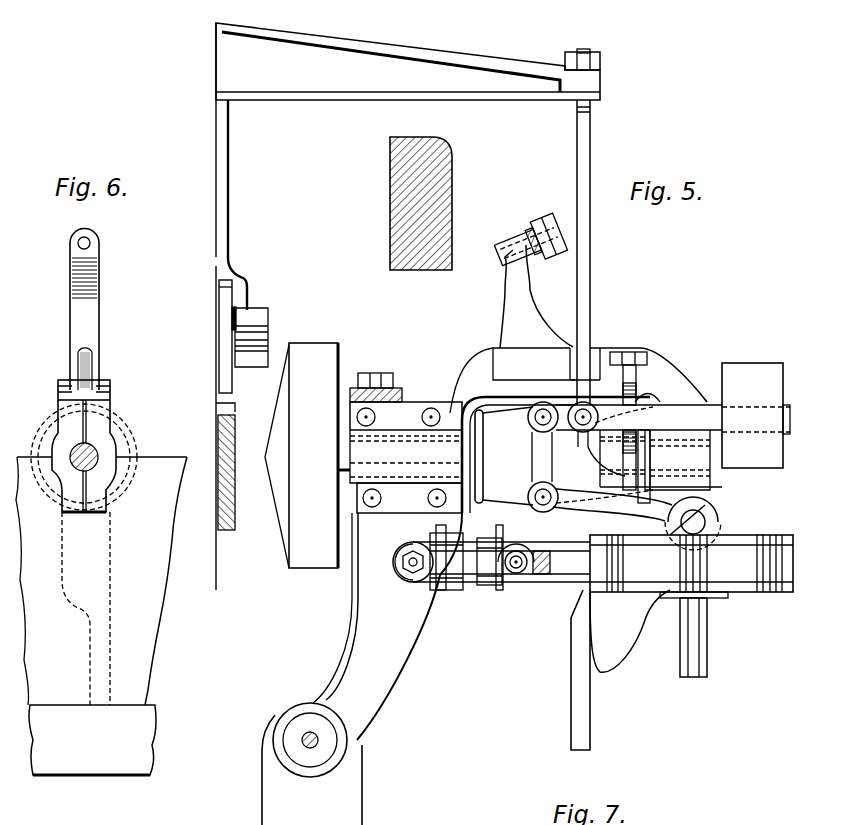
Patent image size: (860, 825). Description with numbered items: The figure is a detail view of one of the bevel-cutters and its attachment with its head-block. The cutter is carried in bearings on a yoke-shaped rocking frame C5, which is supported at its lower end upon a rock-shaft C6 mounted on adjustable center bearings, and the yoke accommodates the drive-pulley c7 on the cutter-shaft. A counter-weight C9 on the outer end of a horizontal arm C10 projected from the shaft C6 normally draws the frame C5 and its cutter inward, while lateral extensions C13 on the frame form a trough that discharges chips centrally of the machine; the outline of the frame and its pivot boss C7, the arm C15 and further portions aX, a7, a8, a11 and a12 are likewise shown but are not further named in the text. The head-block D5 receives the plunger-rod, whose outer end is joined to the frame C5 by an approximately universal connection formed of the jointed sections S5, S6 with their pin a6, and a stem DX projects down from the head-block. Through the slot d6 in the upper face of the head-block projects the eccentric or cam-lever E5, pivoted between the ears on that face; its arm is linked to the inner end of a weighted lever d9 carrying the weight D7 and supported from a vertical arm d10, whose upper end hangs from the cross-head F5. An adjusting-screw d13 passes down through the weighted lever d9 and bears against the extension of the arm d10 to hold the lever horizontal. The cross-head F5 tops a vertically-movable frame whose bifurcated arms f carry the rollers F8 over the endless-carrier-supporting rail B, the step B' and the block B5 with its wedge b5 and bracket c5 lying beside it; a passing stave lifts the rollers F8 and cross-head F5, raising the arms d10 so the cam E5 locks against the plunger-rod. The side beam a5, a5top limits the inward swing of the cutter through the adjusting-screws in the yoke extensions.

In FIG. 6, the counter-weight C9 is at (73, 303).
In FIG. 5, the counter-weight C9 is at (536, 296).
In FIG. 6, the rocking frame C5 is at (108, 392).
In FIG. 5, the rocking frame C5 is at (578, 430).
In FIG. 6, the pivot boss C7 is at (118, 418).
In FIG. 6, the lateral extension C13 is at (101, 581).
In FIG. 5, the lateral extension C13 is at (343, 662).
In FIG. 6, the rock-shaft C6 is at (92, 740).
In FIG. 5, the rock-shaft C6 is at (302, 712).
In FIG. 5, the cross-head F5 is at (408, 61).
In FIG. 5, the bifurcated arm f is at (243, 296).
In FIG. 5, the roller F8 is at (222, 332).
In FIG. 5, the plate step B' is at (238, 402).
In FIG. 5, the endless-carrier-supporting rail B is at (212, 472).
In FIG. 5, the block B5 is at (319, 455).
In FIG. 5, the wedge b5 is at (278, 462).
In FIG. 5, the rail bracket c5 is at (386, 427).
In FIG. 5, the horizontal arm C10 is at (521, 211).
In FIG. 5, the vertical arm d10 is at (601, 252).
In FIG. 5, the weighted lever d9 is at (639, 418).
In FIG. 5, the pivot pin aX is at (536, 416).
In FIG. 5, the pivot pin a8 is at (579, 431).
In FIG. 5, the link a7 is at (541, 472).
In FIG. 5, the drive-pulley c7 is at (504, 456).
In FIG. 5, the hook a11 is at (612, 455).
In FIG. 5, the block a12 is at (661, 460).
In FIG. 5, the adjusting-screw d13 is at (637, 372).
In FIG. 5, the weight D7 is at (756, 415).
In FIG. 5, the cam-lever E5 is at (705, 504).
In FIG. 5, the side beam a5 is at (720, 525).
In FIG. 5, the side beam a5top is at (400, 203).
In FIG. 5, the head-block D5 is at (691, 563).
In FIG. 5, the stem DX is at (708, 646).
In FIG. 5, the slot d6 is at (585, 531).
In FIG. 5, the pin a6 is at (523, 544).
In FIG. 5, the jointed section S5 is at (428, 553).
In FIG. 5, the jointed section S6 is at (490, 550).
In FIG. 5, the arm C15 is at (410, 592).